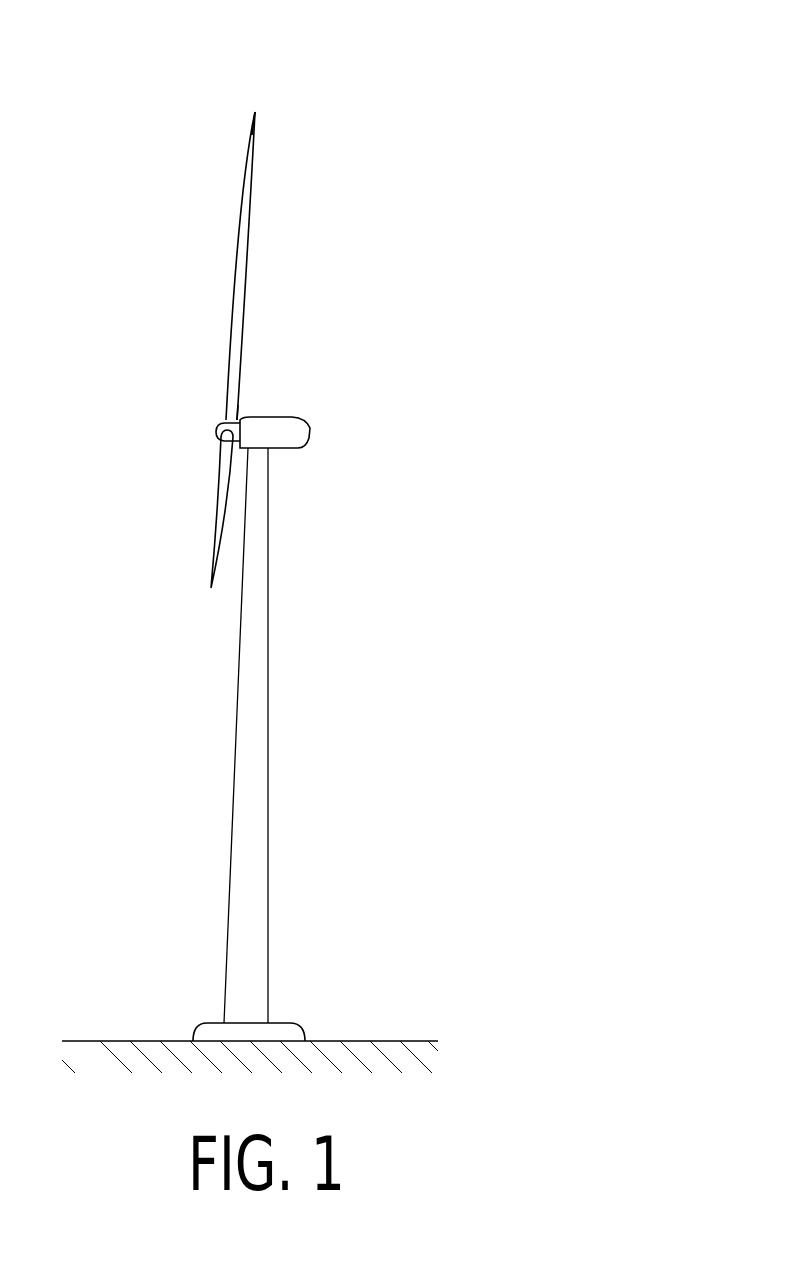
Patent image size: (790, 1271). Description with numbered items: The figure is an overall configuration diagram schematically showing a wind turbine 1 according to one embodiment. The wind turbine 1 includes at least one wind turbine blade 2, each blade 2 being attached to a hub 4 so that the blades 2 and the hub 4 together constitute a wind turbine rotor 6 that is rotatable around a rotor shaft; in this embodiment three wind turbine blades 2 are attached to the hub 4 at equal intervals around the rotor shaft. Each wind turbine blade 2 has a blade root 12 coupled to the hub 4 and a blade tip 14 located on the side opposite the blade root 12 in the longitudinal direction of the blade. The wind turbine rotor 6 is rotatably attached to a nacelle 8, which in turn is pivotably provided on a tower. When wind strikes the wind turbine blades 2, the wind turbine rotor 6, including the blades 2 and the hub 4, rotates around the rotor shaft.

The wind turbine 1 is at (428, 101).
The wind turbine blade 2 is at (240, 190).
The hub 4 is at (224, 428).
The wind turbine rotor 6 is at (200, 432).
The nacelle 8 is at (290, 418).
The blade root 12 is at (242, 404).
The blade tip 14 is at (257, 113).